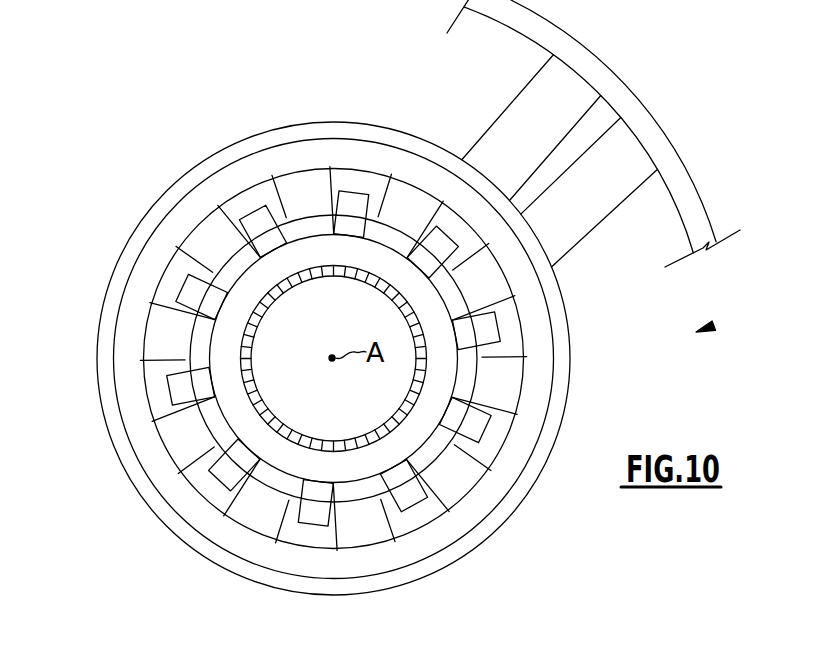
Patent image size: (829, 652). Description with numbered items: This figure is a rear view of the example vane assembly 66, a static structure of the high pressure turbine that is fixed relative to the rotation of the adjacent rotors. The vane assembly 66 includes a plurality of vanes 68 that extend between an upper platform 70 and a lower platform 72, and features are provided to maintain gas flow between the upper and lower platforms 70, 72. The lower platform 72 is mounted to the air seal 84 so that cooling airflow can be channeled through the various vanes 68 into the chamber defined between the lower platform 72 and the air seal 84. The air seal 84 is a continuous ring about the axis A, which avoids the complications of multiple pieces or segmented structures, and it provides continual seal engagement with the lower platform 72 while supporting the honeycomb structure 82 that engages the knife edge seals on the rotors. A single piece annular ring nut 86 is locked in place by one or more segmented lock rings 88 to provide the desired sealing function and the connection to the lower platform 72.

The vane assembly 66 is at (710, 326).
The vane 68 is at (585, 213).
The upper platform 70 is at (683, 189).
The lower platform 72 is at (562, 378).
The honeycomb structure 82 is at (240, 353).
The air seal 84 is at (257, 437).
The annular ring nut 86 is at (478, 432).
The segmented lock ring 88 is at (397, 480).